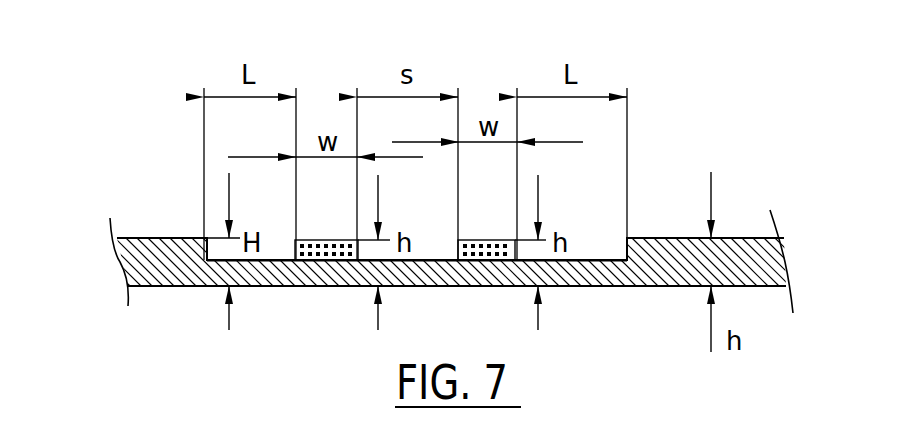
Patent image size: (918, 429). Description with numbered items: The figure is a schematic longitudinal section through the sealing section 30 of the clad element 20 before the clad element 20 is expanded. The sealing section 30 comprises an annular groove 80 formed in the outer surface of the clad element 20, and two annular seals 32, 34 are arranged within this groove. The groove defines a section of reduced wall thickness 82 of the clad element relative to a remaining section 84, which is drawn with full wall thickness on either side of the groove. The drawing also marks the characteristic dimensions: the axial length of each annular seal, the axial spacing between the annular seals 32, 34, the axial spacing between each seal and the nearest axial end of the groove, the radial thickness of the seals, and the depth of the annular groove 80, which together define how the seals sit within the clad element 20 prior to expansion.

The clad element 20 is at (666, 242).
The sealing section 30 is at (345, 83).
The annular seal 32 is at (313, 240).
The annular seal 34 is at (478, 240).
The annular groove 80 is at (598, 250).
The section of reduced wall thickness 82 is at (565, 270).
The remaining section 84 is at (670, 268).